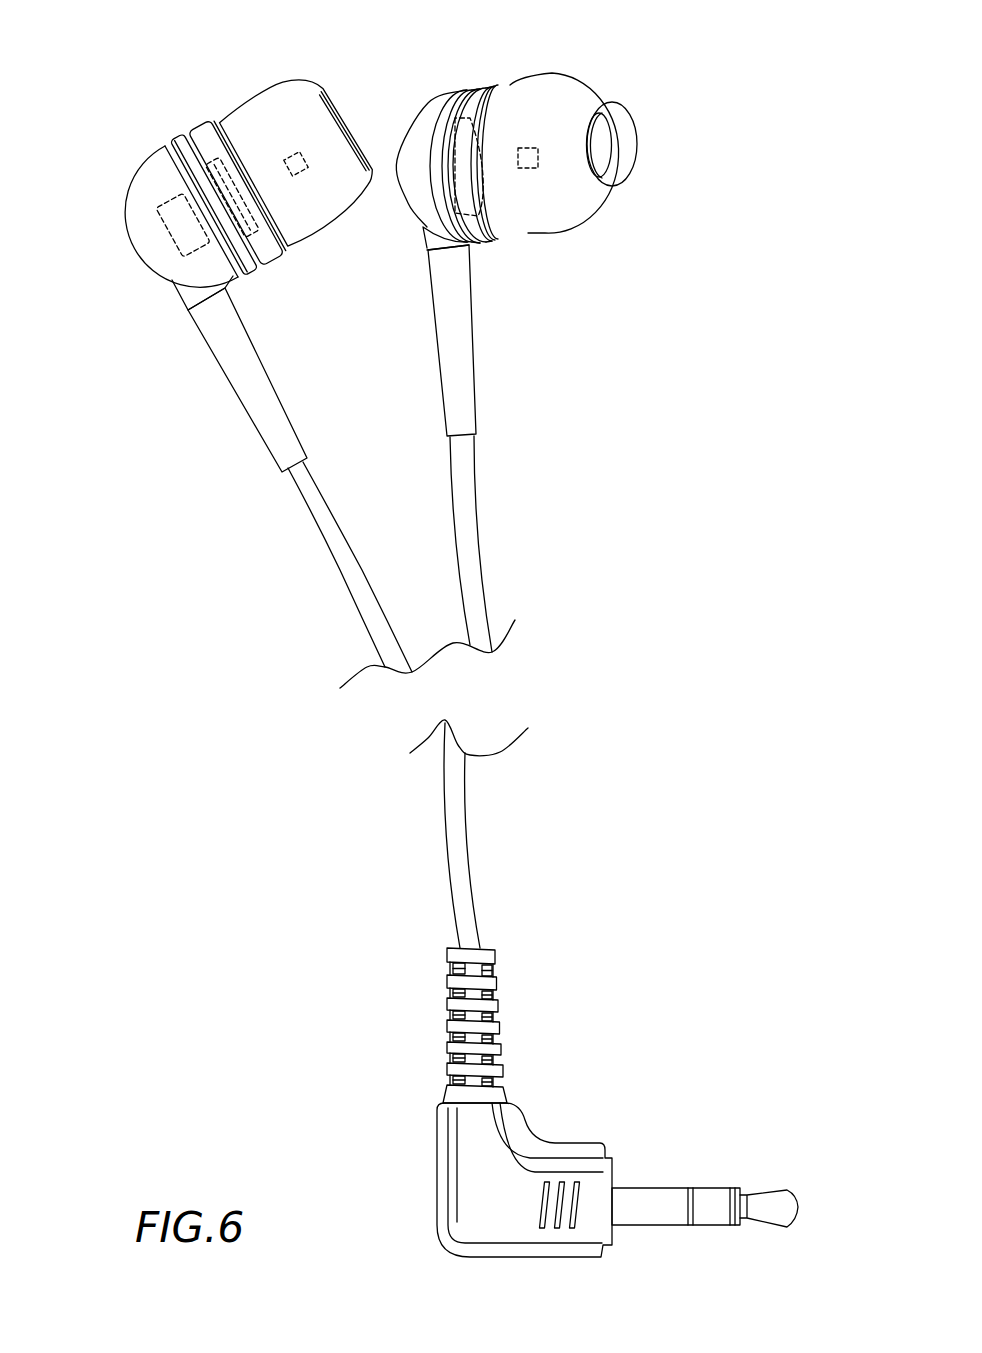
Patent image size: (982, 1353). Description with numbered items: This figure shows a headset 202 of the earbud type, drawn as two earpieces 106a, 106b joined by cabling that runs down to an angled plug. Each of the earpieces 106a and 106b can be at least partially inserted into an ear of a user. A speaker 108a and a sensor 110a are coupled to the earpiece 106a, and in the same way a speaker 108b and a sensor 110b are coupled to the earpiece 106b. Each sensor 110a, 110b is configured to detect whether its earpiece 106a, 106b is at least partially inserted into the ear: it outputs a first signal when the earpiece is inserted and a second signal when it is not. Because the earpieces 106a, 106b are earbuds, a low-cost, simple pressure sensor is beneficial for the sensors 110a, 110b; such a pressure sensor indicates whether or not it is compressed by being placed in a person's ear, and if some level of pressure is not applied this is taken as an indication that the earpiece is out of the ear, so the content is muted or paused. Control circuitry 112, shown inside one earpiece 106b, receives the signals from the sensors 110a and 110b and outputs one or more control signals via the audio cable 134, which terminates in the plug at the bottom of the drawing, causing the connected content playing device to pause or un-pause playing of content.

The earpiece 106a is at (423, 107).
The earpiece 106b is at (145, 167).
The speaker 108a is at (467, 120).
The speaker 108b is at (210, 143).
The sensor 110a is at (528, 168).
The sensor 110b is at (297, 175).
The control circuitry 112 is at (167, 228).
The audio cable 134 is at (458, 853).
The headset 202 is at (683, 83).